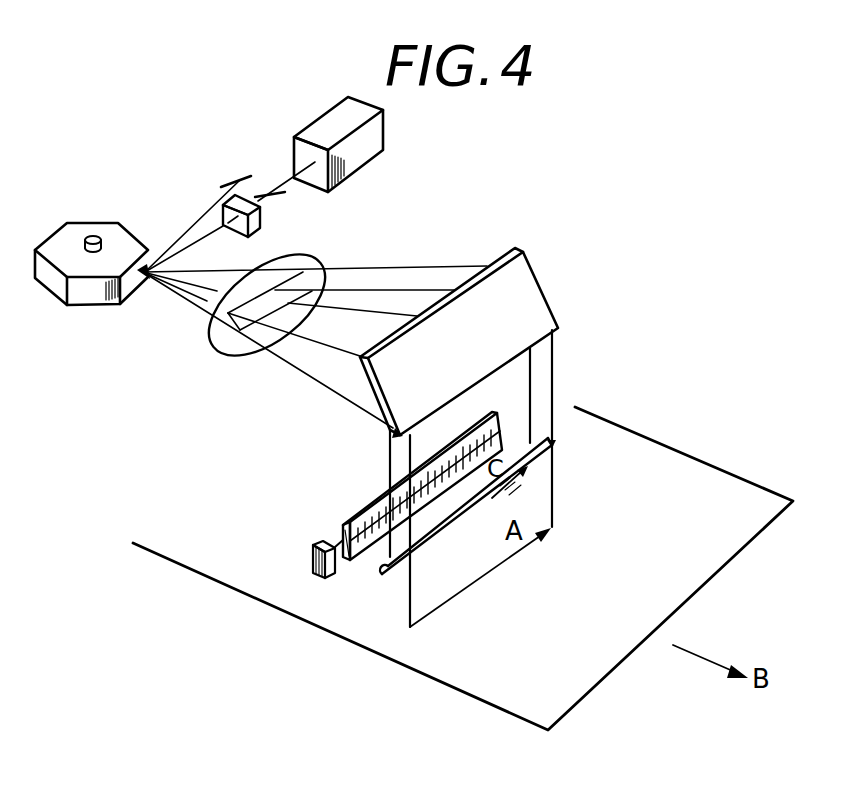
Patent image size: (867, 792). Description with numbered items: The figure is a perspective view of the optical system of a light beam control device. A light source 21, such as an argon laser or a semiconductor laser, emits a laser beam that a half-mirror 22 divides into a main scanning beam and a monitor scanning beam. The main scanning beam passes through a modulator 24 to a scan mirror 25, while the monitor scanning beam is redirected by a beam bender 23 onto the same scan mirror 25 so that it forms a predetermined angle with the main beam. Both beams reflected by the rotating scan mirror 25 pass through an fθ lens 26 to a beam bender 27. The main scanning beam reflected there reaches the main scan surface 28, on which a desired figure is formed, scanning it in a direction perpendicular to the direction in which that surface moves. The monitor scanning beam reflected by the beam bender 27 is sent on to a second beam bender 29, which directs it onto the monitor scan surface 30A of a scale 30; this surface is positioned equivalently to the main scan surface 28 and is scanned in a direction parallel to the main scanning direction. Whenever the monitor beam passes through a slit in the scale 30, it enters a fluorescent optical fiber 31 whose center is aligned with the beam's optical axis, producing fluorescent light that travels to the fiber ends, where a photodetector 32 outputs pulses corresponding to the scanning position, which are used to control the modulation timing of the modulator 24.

The light source 21 is at (333, 122).
The half-mirror 22 is at (279, 194).
The beam bender 23 is at (226, 187).
The modulator 24 is at (261, 221).
The scan mirror 25 is at (108, 230).
The fθ lens 26 is at (216, 343).
The beam bender 27 is at (540, 306).
The main scan surface 28 is at (735, 485).
The beam bender 29 is at (397, 572).
The scale 30 is at (363, 508).
The monitor scan surface 30A is at (357, 561).
The fluorescent optical fiber 31 is at (341, 541).
The photodetector 32 is at (312, 558).